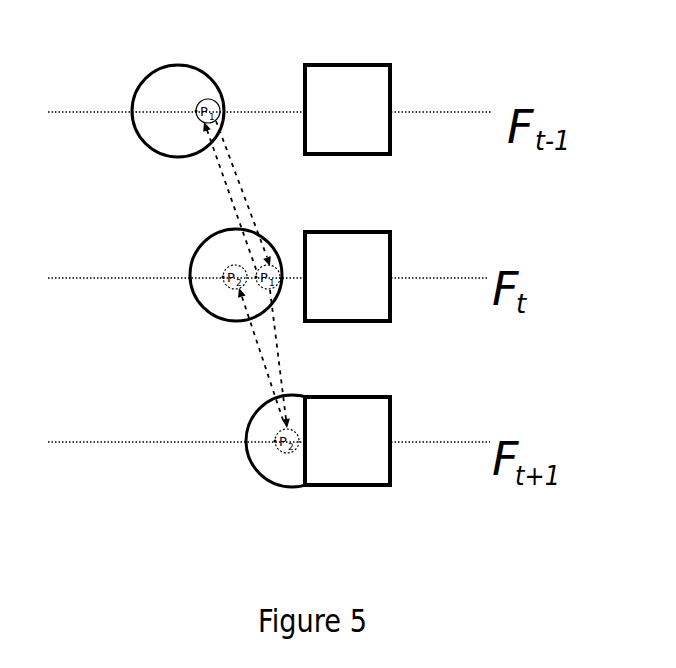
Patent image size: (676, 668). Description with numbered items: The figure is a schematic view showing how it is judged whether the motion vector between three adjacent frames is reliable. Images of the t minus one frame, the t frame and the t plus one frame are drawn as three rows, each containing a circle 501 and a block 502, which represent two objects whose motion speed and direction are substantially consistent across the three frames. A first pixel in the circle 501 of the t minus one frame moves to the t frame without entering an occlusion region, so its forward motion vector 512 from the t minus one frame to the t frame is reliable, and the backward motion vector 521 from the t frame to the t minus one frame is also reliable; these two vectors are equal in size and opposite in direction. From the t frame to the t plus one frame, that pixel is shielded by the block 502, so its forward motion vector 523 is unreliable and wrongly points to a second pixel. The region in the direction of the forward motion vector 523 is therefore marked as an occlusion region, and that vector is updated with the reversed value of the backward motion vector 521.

The circle 501 is at (197, 65).
The block 502 is at (392, 77).
The backward motion vector 521 is at (230, 203).
The forward motion vector 512 is at (240, 179).
The forward motion vector 523 is at (273, 340).